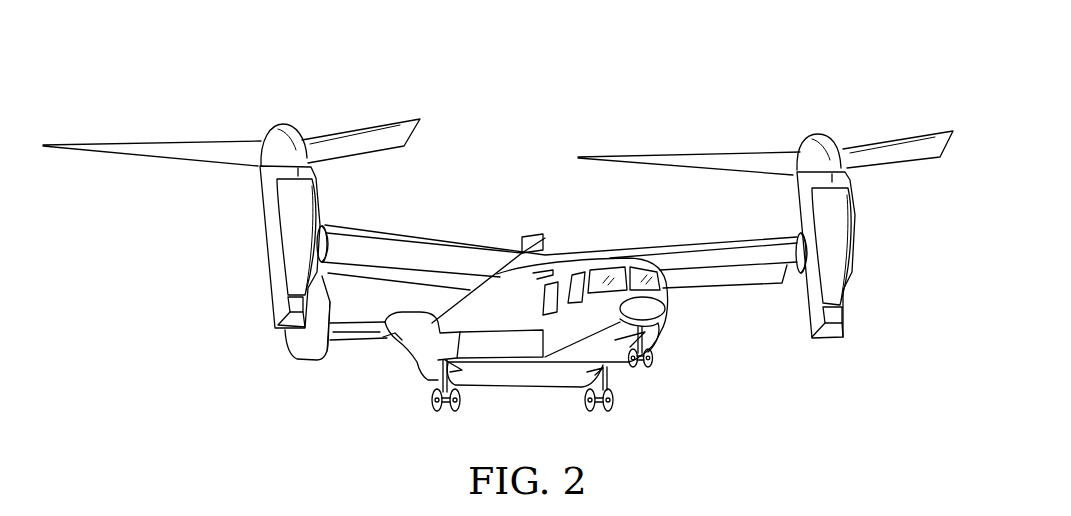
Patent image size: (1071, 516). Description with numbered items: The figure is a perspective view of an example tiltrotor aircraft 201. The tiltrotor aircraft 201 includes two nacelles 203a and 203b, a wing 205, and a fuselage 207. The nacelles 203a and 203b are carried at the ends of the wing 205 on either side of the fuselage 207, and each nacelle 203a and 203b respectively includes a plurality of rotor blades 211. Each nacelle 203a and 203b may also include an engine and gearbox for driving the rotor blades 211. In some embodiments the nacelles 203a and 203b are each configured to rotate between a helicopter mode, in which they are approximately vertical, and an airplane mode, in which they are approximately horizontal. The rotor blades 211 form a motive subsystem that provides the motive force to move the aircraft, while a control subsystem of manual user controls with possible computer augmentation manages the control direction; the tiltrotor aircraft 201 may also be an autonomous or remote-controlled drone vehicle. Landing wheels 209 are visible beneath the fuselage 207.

The tiltrotor aircraft 201 is at (635, 77).
The nacelle 203a is at (228, 242).
The nacelle 203b is at (878, 258).
The wing 205 is at (435, 237).
The fuselage 207 is at (668, 317).
The landing wheels 209 is at (432, 398).
The rotor blades 211 is at (187, 143).